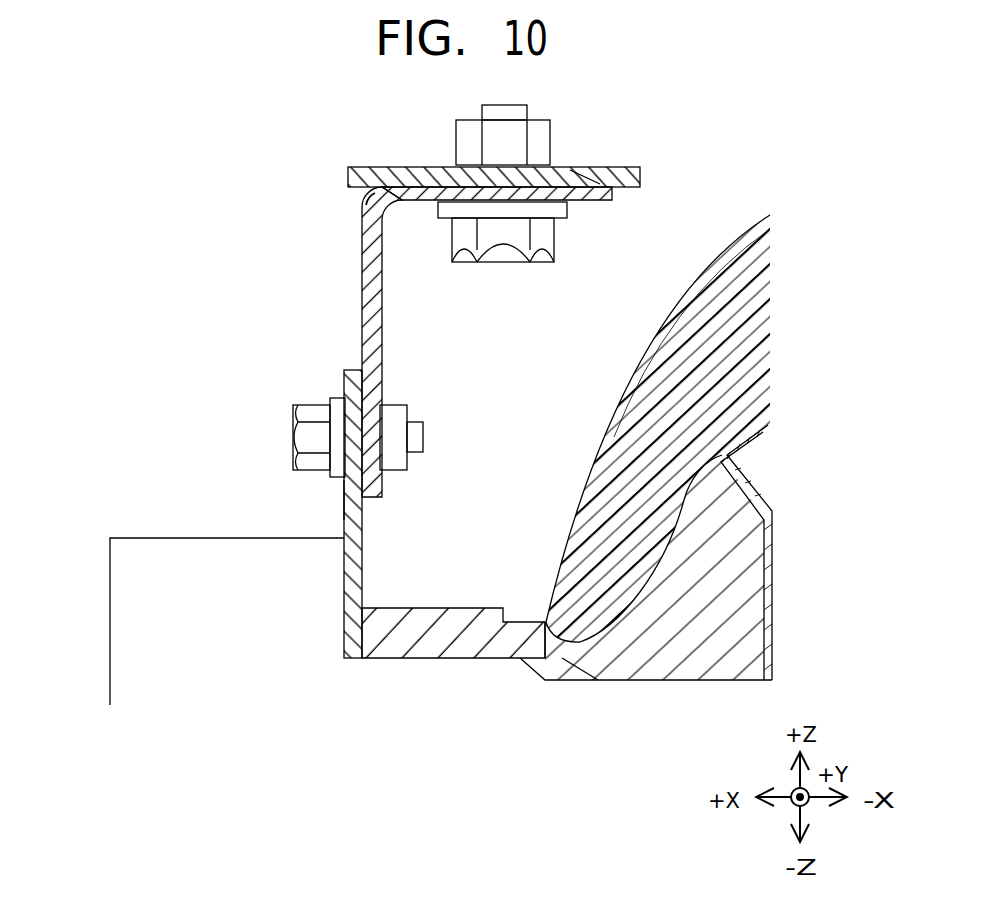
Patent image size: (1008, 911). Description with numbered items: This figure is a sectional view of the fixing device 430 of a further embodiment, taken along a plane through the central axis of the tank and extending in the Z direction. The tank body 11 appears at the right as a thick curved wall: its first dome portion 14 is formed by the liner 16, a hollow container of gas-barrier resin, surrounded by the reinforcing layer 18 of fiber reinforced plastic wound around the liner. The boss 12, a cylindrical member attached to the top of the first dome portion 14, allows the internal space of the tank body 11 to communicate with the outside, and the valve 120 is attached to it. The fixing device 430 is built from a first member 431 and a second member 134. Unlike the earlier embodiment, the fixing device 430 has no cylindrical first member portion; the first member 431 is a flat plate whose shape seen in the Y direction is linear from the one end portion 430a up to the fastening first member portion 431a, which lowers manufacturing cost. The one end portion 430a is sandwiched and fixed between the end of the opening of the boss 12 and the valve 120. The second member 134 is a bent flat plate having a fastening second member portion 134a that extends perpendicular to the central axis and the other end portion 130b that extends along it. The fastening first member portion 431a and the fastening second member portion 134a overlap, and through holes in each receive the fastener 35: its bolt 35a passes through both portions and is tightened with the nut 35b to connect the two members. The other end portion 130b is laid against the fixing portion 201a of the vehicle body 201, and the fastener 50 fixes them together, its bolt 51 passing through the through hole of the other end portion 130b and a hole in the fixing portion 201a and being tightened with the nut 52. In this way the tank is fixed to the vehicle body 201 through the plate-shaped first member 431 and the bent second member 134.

The fixing device 430 is at (290, 439).
The first member 431 is at (366, 542).
The fastening first member portion 431a is at (343, 503).
The one end portion 430a is at (351, 652).
The second member 134 is at (372, 342).
The other end portion 130b is at (423, 192).
The fastening second member portion 134a is at (364, 302).
The fastener 35 is at (279, 383).
The bolt 35a is at (318, 408).
The nut 35b is at (394, 412).
The vehicle body 201 is at (392, 162).
The fixing portion 201a is at (587, 184).
The fastener 50 is at (560, 192).
The nut 52 is at (540, 148).
The bolt 51 is at (622, 205).
The valve 120 is at (137, 600).
The first dome portion 14 is at (730, 208).
The tank body 11 is at (658, 374).
The reinforcing layer 18 is at (758, 332).
The liner 16 is at (762, 503).
The boss 12 is at (743, 583).